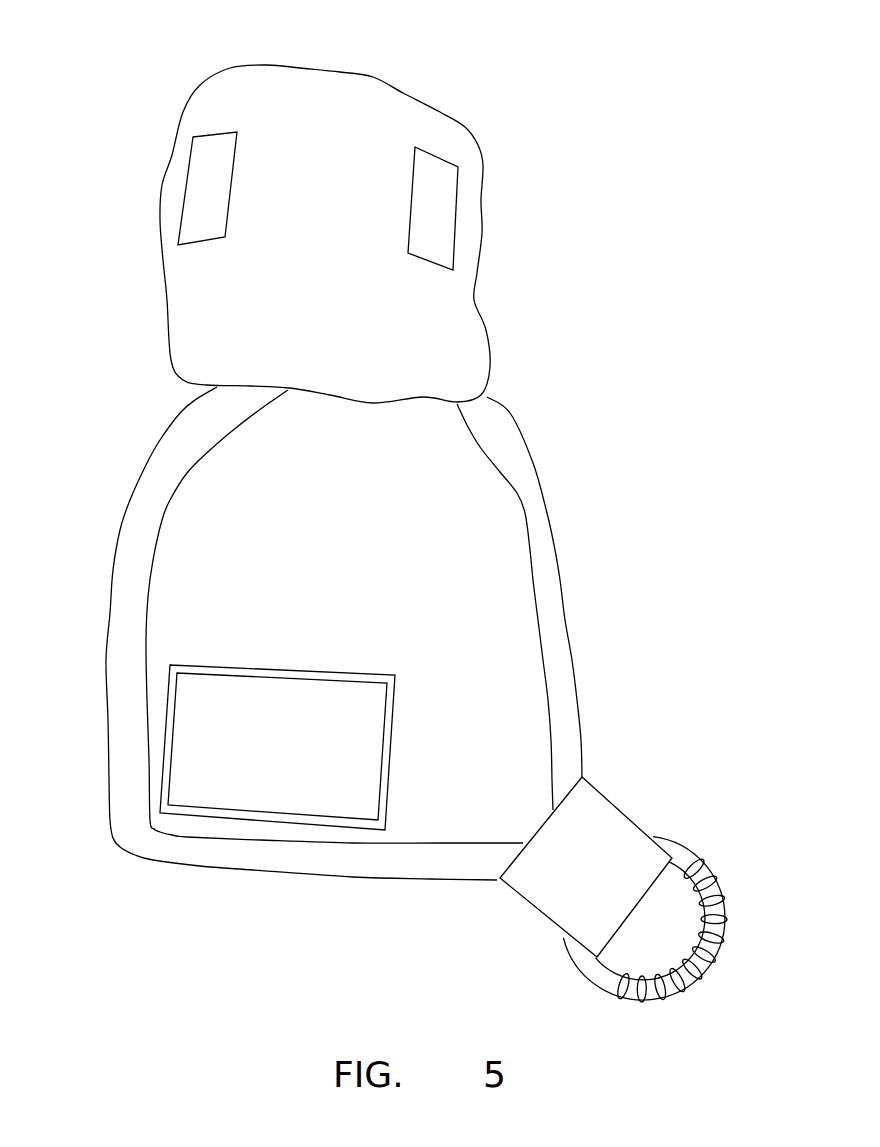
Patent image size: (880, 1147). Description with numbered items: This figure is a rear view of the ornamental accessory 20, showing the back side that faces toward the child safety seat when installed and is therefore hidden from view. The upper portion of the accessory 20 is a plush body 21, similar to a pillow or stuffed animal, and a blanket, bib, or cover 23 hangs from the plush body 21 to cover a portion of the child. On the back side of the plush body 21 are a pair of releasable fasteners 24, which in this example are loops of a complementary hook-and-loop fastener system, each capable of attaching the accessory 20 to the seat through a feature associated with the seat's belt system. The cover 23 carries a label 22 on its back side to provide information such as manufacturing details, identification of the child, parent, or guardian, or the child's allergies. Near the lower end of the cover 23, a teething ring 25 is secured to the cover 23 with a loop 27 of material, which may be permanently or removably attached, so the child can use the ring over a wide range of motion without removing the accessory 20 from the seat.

The accessory 20 is at (470, 123).
The plush body 21 is at (452, 345).
The labels 22 is at (167, 698).
The cover 23 is at (490, 593).
The releasable fasteners 24 is at (427, 203).
The teething ring 25 is at (682, 973).
The loop 27 is at (573, 900).